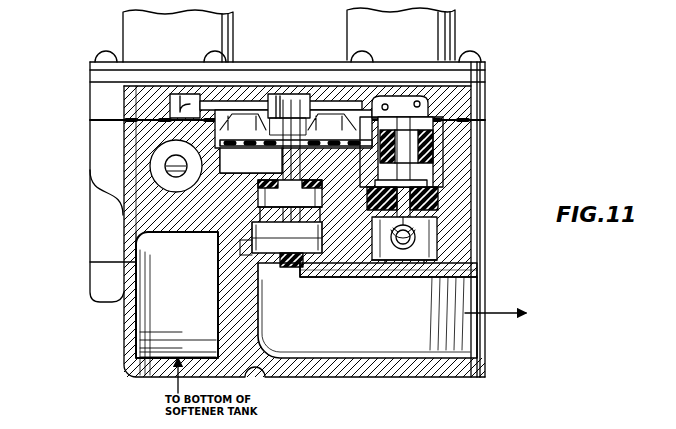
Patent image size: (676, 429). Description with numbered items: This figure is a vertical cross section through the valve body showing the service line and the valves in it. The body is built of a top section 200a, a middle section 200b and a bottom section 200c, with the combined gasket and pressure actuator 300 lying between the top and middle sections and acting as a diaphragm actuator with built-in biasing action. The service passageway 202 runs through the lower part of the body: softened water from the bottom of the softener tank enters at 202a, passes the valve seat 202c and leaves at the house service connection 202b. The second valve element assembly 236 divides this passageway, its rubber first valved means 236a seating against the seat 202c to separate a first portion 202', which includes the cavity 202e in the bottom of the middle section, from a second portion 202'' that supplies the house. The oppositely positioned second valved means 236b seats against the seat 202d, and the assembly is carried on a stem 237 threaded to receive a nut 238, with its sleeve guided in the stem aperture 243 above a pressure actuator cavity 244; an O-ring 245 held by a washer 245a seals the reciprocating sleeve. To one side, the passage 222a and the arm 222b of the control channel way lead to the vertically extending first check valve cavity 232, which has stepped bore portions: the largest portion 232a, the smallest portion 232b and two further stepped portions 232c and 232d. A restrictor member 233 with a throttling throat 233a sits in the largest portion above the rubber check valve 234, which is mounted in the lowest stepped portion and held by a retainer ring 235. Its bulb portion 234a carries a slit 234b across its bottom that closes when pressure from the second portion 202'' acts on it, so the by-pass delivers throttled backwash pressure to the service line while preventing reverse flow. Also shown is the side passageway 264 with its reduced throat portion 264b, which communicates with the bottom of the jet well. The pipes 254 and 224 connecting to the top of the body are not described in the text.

The inlet pipe 254 is at (136, 30).
The outlet pipe 224 is at (447, 30).
The top section 200a is at (96, 105).
The combined gasket and pressure actuator 300 is at (90, 120).
The middle section 200b is at (96, 152).
The bottom section 200c is at (98, 285).
The first portion of service passageway 202' is at (115, 312).
The service passageway inlet 202a is at (150, 370).
The cavity 202e is at (173, 228).
The valve seat 202d is at (256, 210).
The service passageway 202 is at (232, 313).
The second portion of service passageway 202'' is at (367, 328).
The house service connection 202b is at (487, 345).
The valve seat 202c is at (326, 270).
The side passageway 264 is at (164, 186).
The reduced throat portion 264b is at (176, 158).
The second valve element pressure actuator cavity 244 is at (215, 171).
The stem aperture 243 is at (282, 168).
The nut 238 is at (282, 104).
The second valve element assembly 236 is at (300, 104).
The passage 222a is at (374, 108).
The arm of first pressure control channel way 222b is at (420, 106).
The restrictor member 233 is at (434, 134).
The first check valve cavity 232 is at (440, 136).
The largest diameter bore portion 232a is at (432, 150).
The smallest diameter bore portion 232b is at (426, 177).
The stepped bore portion 232c is at (421, 198).
The stepped bore portion 232d is at (440, 205).
The throttling throat 233a is at (362, 156).
The O-ring 245 is at (323, 184).
The washer 245a is at (322, 210).
The second valved means 236b is at (323, 228).
The first valved means 236a is at (258, 250).
The bolt or stem 237 is at (290, 270).
The check valve 234 is at (436, 224).
The bulb portion 234a is at (428, 232).
The retainer ring 235 is at (437, 248).
The slit 234b is at (404, 272).